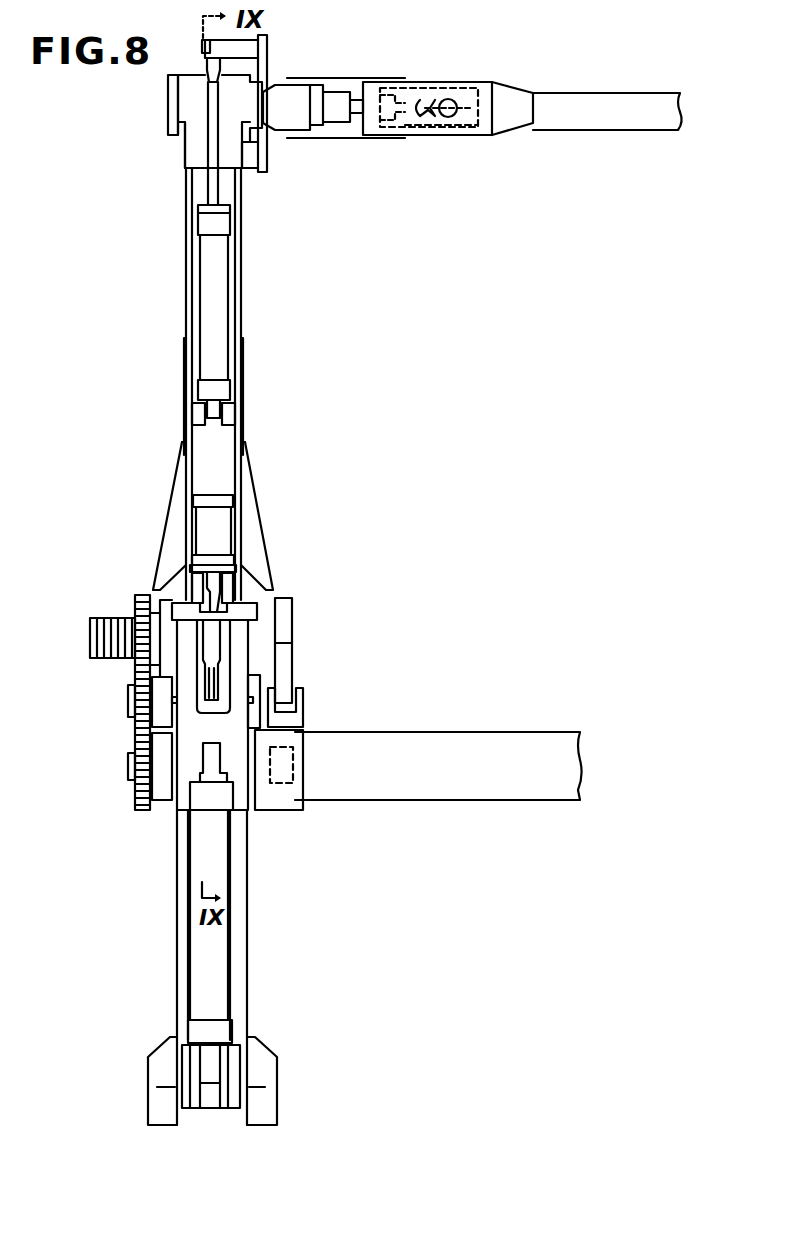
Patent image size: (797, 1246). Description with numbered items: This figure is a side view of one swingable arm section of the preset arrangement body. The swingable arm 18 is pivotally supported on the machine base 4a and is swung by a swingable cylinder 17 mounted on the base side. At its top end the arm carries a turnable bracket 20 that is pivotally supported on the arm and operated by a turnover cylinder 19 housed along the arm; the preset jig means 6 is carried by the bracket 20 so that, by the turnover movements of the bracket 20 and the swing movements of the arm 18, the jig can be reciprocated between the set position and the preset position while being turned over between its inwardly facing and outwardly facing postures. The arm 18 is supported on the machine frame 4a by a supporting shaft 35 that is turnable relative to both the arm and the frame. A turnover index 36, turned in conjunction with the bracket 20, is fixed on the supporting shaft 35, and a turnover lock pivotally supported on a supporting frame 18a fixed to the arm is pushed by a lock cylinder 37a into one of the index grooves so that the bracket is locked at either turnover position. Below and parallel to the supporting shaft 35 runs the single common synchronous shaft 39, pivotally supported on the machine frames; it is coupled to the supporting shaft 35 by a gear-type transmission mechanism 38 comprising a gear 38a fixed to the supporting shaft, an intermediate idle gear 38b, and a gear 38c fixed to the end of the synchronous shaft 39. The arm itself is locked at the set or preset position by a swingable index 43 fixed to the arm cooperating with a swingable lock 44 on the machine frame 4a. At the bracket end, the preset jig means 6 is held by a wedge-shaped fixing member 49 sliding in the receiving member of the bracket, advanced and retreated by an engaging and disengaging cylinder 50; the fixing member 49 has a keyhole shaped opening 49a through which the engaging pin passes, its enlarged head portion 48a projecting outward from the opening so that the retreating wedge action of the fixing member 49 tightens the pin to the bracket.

The machine base 4a is at (182, 862).
The preset jig means 6 is at (615, 118).
The swingable cylinder 17 is at (208, 932).
The swingable arm 18 is at (196, 192).
The supporting frame 18a is at (190, 373).
The turnover cylinder 19 is at (208, 282).
The turnable bracket 20 is at (265, 63).
The supporting shaft 35 is at (152, 633).
The turnover index 36 is at (212, 634).
The lock cylinder 37a is at (215, 532).
The transmission mechanism 38 is at (130, 726).
The gear 38a is at (160, 598).
The intermediate idle gear 38b is at (140, 700).
The gear 38c is at (140, 776).
The synchronous shaft 39 is at (432, 790).
The swingable index 43 is at (284, 628).
The swingable lock 44 is at (285, 688).
The enlarged head portion 48a is at (448, 99).
The fixing member 49 is at (485, 90).
The keyhole shaped opening 49a is at (436, 128).
The engaging and disengaging cylinder 50 is at (294, 112).